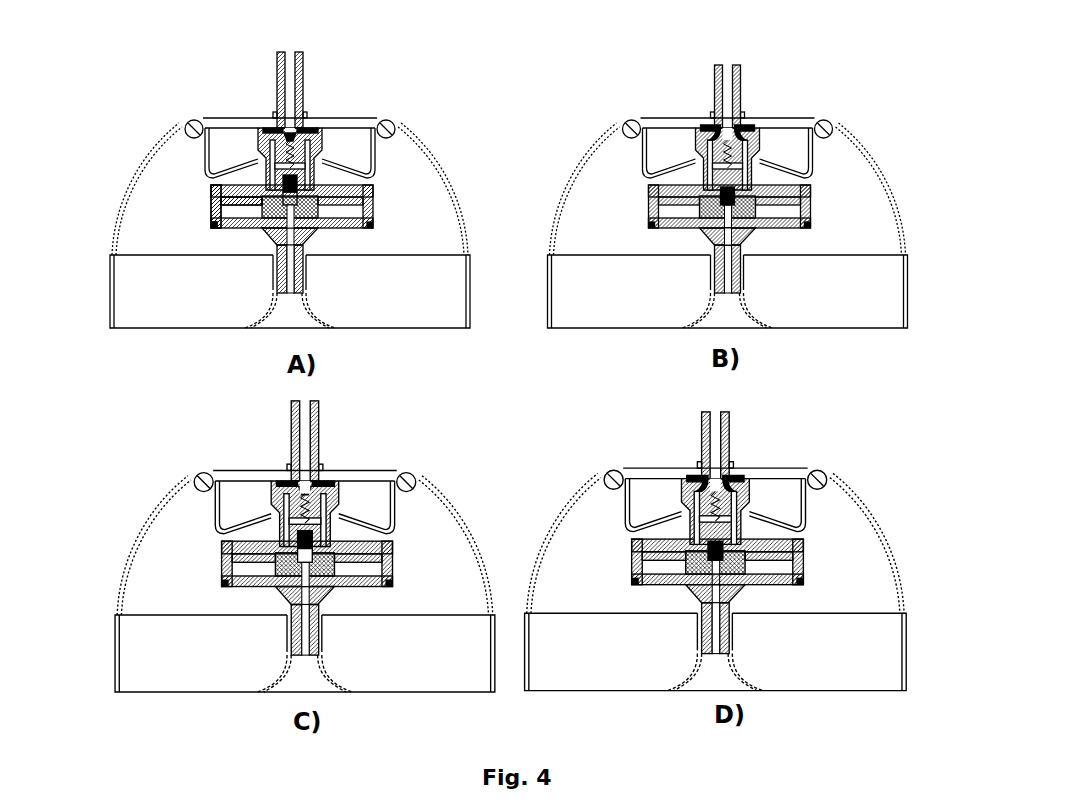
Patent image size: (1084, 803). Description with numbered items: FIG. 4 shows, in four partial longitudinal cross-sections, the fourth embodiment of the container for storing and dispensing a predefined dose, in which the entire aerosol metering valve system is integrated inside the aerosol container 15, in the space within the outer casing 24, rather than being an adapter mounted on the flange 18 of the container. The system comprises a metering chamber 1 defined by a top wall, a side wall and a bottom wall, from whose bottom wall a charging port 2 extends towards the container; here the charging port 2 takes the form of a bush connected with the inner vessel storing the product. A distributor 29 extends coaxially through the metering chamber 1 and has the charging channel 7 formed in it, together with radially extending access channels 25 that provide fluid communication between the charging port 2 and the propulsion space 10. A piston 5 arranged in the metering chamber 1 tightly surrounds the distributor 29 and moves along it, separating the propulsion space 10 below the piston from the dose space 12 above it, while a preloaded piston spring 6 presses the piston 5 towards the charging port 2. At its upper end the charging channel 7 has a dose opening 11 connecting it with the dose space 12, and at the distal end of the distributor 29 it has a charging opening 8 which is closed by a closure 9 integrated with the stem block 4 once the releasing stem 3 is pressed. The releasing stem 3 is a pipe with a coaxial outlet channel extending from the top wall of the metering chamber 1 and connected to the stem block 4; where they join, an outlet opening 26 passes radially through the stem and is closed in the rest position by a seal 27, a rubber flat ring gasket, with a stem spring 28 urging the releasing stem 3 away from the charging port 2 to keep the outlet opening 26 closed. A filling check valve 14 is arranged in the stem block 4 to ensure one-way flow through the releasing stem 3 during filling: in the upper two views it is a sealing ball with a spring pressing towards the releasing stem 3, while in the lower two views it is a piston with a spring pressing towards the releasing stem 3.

The metering chamber 1 is at (220, 553).
The charging port 2 is at (317, 645).
The releasing stem 3 is at (737, 68).
The stem block 4 is at (316, 149).
The piston 5 is at (224, 211).
The piston spring 6 is at (333, 193).
The charging channel 7 is at (727, 208).
The charging opening 8 is at (295, 199).
The closure 9 is at (718, 553).
The propulsion space 10 is at (793, 570).
The dose opening 11 is at (282, 550).
The dose space 12 is at (227, 192).
The filling check valve 14 is at (287, 130).
The aerosol container 15 is at (116, 207).
The flange 18 is at (203, 482).
The outer casing 24 is at (907, 651).
The access channels 25 is at (745, 233).
The outlet opening 26 is at (728, 495).
The seal 27 is at (753, 127).
The stem spring 28 is at (281, 178).
The distributor 29 is at (706, 197).